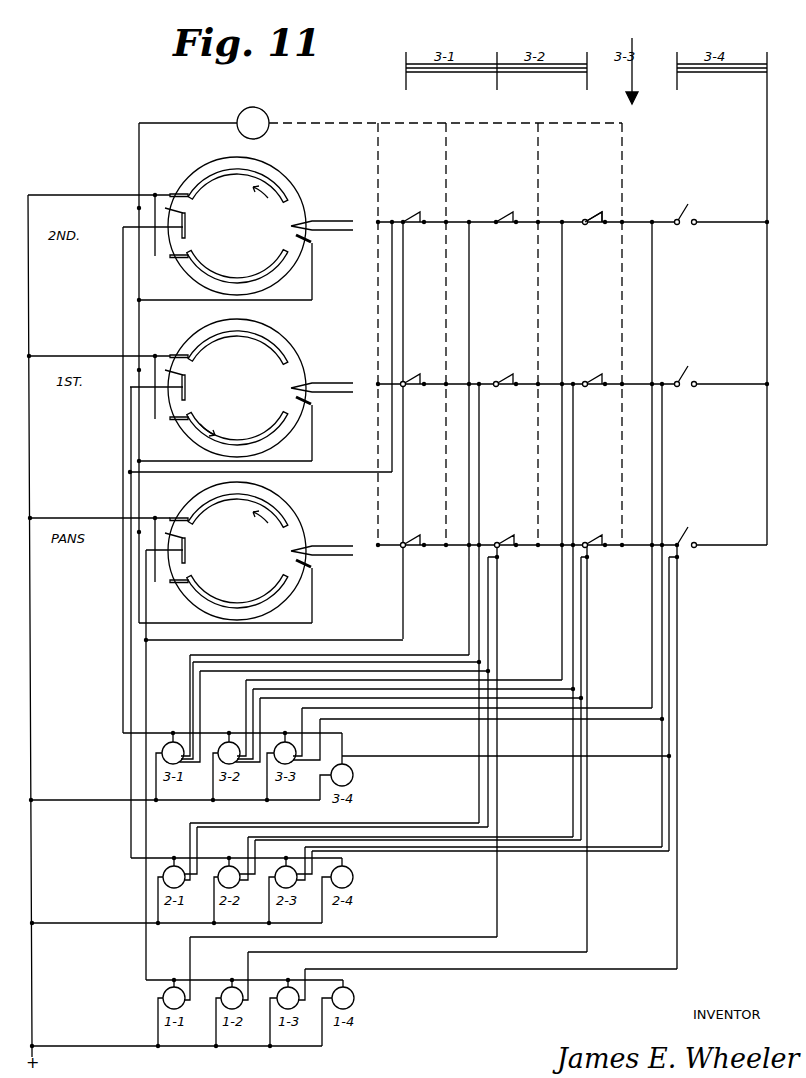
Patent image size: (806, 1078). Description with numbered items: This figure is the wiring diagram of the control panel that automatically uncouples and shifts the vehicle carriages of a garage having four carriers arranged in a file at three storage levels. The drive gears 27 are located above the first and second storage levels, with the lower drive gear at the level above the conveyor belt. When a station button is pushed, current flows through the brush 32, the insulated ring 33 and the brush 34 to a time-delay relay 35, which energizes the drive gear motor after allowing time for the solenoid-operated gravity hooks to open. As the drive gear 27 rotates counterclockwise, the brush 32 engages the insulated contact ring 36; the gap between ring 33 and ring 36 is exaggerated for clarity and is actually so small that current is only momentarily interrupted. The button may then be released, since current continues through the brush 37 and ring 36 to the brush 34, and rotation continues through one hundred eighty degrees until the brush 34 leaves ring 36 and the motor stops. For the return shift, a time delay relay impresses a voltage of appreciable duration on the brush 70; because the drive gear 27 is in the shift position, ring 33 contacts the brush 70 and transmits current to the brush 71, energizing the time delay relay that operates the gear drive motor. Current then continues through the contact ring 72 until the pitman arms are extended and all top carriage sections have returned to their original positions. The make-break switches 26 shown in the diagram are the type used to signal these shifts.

The reversing switch 26 is at (683, 212).
The drive gear 27 is at (292, 184).
The brush 32 is at (175, 254).
The insulated ring 33 is at (186, 230).
The brush 34 is at (190, 212).
The time-delay relay 35 is at (266, 107).
The insulated contact ring 36 is at (240, 171).
The brush 37 is at (185, 193).
The brush 70 is at (313, 221).
The brush 71 is at (313, 238).
The contact ring 72 is at (249, 280).